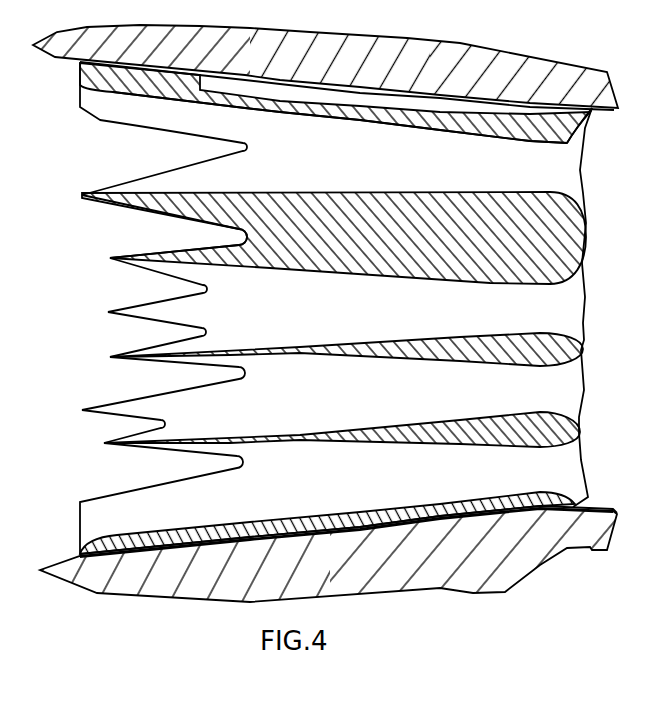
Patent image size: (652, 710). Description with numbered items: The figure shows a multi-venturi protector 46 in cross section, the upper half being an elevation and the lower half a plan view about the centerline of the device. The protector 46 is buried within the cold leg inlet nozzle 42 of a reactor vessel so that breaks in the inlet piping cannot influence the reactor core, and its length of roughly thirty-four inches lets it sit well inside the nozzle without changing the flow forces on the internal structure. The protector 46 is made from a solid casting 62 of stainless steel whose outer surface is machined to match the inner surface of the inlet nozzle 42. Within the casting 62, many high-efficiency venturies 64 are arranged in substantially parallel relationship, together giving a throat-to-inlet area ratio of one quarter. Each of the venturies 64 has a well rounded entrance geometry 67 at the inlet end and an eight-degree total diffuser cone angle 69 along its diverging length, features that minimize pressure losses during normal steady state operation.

The inlet nozzle 42 is at (268, 86).
The multi-venturi protector 46 is at (630, 180).
The solid casting 62 is at (512, 130).
The venturies 64 is at (377, 173).
The rounded entrance geometry 67 is at (585, 145).
The total diffuser cone angle 69 is at (432, 130).